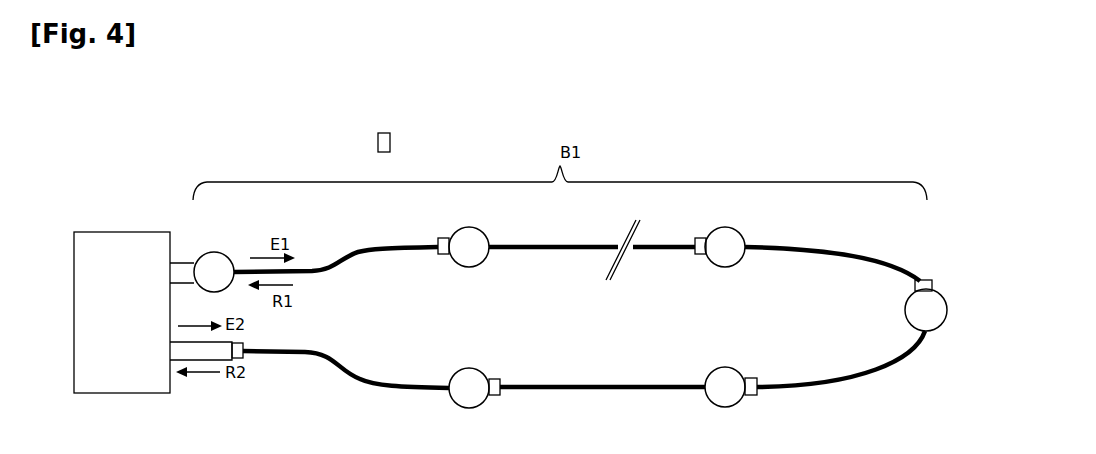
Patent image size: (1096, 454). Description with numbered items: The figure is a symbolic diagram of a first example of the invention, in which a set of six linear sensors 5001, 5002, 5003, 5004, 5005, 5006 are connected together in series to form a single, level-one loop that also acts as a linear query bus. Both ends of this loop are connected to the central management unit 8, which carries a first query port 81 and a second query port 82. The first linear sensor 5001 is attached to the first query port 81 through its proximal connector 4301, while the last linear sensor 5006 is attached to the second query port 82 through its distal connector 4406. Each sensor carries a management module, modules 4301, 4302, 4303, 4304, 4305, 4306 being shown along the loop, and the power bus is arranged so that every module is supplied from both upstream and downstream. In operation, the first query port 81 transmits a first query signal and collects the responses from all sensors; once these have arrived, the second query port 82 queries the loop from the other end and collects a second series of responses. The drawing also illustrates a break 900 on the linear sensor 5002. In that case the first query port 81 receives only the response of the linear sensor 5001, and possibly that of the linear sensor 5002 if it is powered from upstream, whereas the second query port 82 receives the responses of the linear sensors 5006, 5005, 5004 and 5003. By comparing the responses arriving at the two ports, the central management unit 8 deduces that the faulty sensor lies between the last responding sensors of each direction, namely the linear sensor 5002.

The central management unit 8 is at (122, 312).
The first query port 81 is at (168, 273).
The second query port 82 is at (187, 348).
The proximal connector 4301 is at (218, 262).
The module 4302 is at (463, 236).
The module 4303 is at (720, 236).
The module 4304 is at (899, 305).
The module 4305 is at (731, 375).
The module 4306 is at (474, 378).
The distal connector 4406 is at (245, 354).
The first linear sensor 5001 is at (336, 249).
The linear sensor 5002 is at (592, 237).
The linear sensor 5003 is at (832, 249).
The linear sensor 5004 is at (841, 369).
The linear sensor 5005 is at (602, 401).
The last linear sensor 5006 is at (346, 377).
The break 900 is at (625, 233).